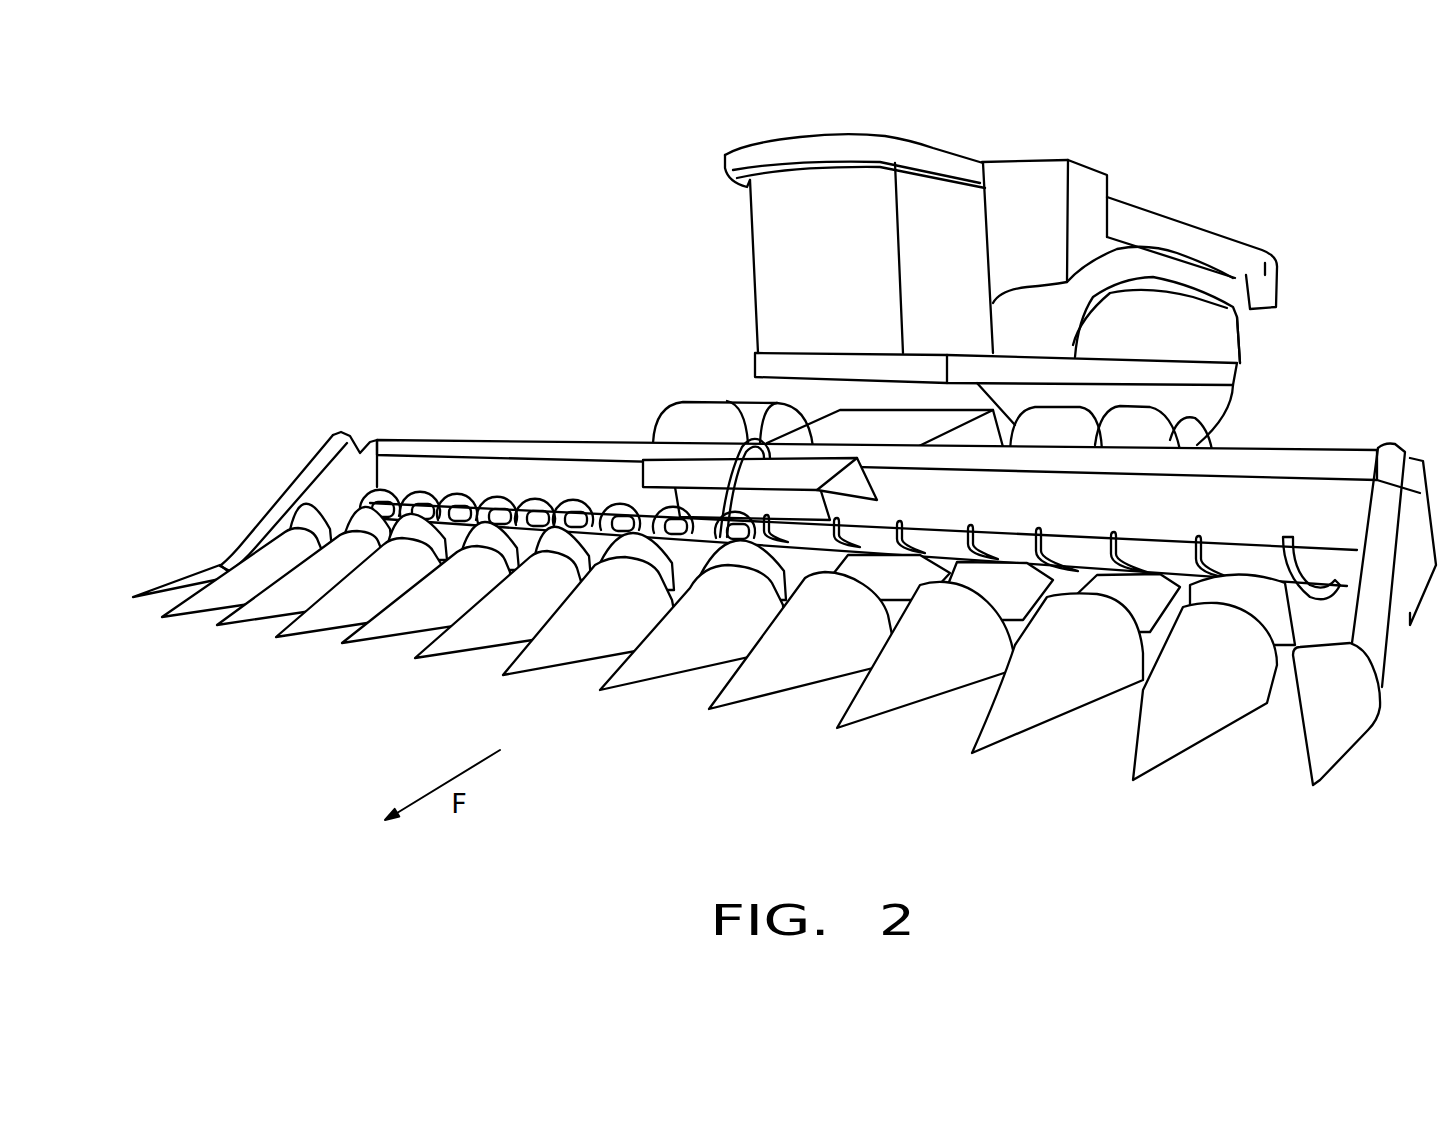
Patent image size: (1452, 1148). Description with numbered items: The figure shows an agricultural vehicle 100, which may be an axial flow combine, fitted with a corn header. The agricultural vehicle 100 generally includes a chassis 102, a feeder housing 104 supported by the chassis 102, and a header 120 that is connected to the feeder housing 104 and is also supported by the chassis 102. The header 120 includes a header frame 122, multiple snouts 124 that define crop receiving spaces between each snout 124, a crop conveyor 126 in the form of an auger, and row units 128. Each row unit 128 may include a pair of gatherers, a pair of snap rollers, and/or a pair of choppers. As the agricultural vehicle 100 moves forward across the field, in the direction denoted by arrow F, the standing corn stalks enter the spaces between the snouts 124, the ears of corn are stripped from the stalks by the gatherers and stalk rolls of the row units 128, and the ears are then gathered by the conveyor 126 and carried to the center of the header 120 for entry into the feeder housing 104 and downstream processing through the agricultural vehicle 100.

The agricultural vehicle 100 is at (1182, 151).
The chassis 102 is at (1232, 347).
The feeder housing 104 is at (820, 435).
The header 120 is at (784, 596).
The header frame 122 is at (492, 447).
The snout 124 is at (1035, 706).
The crop conveyor 126 is at (1250, 522).
The row unit 128 is at (756, 716).